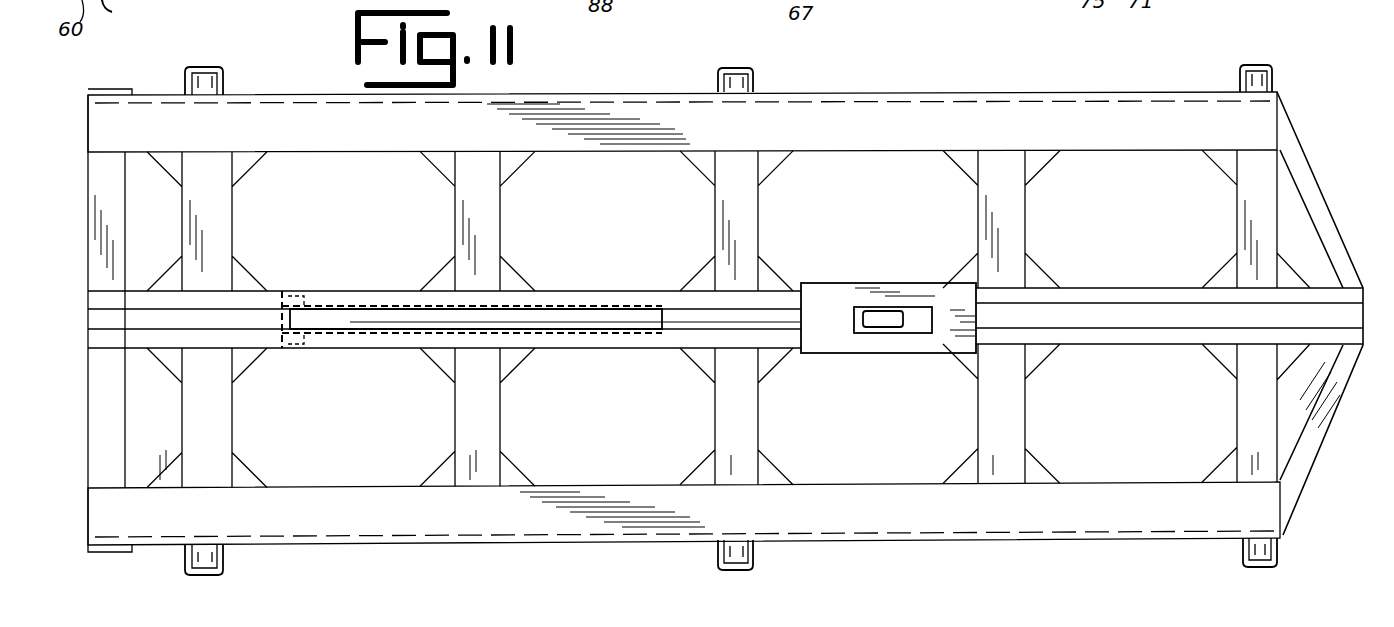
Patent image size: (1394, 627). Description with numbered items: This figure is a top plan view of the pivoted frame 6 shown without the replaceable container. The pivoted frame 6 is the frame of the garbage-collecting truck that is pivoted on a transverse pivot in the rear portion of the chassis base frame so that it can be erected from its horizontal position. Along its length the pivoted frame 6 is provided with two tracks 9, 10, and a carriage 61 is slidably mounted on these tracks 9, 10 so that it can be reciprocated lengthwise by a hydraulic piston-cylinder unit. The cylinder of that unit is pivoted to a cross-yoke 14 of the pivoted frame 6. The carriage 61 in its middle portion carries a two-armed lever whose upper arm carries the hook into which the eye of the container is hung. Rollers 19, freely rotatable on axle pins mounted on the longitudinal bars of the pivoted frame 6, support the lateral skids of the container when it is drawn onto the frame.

The pivoted frame 6 is at (934, 83).
The track 9 is at (1105, 287).
The track 10 is at (1100, 340).
The cross-yoke 14 is at (1255, 78).
The roller 19 is at (206, 68).
The carriage 61 is at (827, 294).